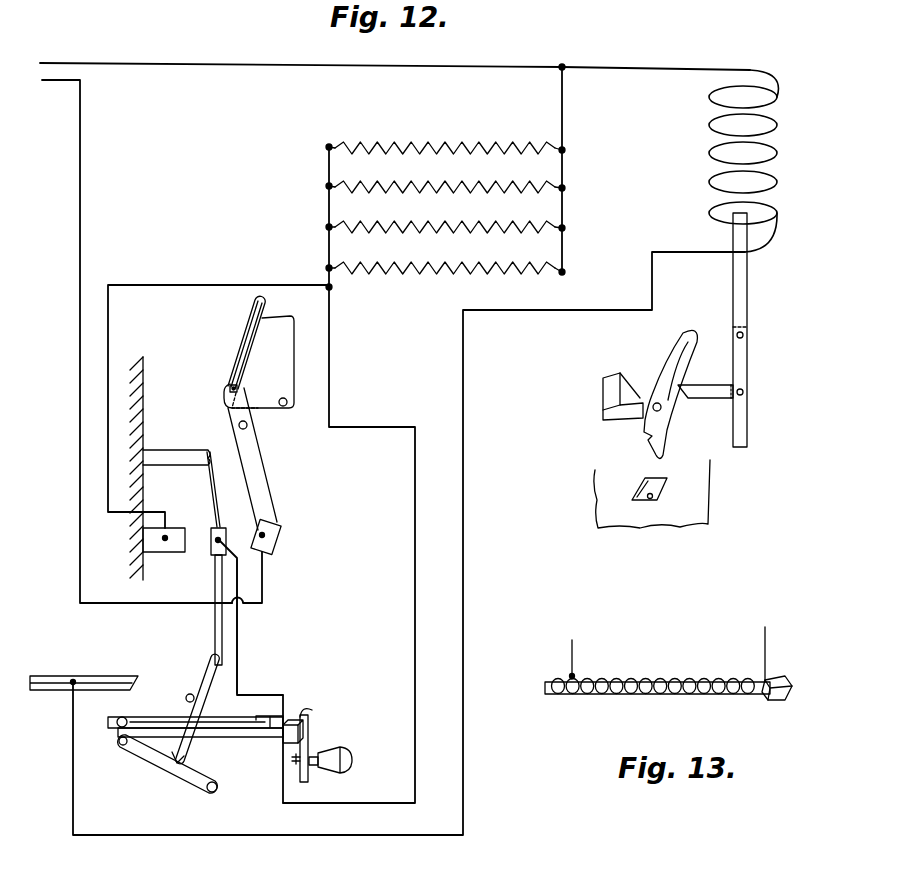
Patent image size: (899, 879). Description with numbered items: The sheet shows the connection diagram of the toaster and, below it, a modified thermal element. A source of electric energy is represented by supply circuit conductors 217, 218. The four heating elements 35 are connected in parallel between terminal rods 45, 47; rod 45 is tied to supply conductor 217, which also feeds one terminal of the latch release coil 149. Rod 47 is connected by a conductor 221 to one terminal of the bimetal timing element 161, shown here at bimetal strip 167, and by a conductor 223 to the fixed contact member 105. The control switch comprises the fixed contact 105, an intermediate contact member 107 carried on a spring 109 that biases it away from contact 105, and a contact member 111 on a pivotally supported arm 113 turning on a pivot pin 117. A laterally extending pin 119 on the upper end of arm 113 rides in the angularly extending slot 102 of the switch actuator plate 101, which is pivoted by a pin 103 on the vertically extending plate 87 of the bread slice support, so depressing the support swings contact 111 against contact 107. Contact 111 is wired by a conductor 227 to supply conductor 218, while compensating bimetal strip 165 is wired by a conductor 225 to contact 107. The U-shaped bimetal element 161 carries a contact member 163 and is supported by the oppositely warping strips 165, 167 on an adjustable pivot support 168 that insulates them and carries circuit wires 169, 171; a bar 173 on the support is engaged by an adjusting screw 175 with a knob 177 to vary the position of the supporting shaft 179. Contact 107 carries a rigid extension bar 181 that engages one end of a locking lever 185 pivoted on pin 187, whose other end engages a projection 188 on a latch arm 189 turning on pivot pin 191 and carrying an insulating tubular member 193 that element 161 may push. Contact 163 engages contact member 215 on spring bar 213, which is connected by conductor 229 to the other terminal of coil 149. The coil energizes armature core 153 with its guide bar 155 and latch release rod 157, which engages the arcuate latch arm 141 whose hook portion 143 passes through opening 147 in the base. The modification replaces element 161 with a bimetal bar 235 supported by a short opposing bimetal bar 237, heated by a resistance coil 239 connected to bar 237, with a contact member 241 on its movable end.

In FIG. 12, the heating elements 35 is at (462, 134).
In FIG. 12, the terminal rod 45 is at (563, 171).
In FIG. 12, the terminal rod 47 is at (329, 178).
In FIG. 12, the vertically-extending plate 87 is at (603, 399).
In FIG. 12, the switch actuator plate 101 is at (270, 373).
In FIG. 12, the angularly extending slot 102 is at (251, 343).
In FIG. 12, the pivot pin 103 is at (287, 402).
In FIG. 12, the fixed contact member 105 is at (185, 556).
In FIG. 12, the intermediate contact member 107 is at (223, 528).
In FIG. 12, the spring 109 is at (209, 497).
In FIG. 12, the contact member 111 is at (271, 529).
In FIG. 12, the pivotally supported arm 113 is at (268, 475).
In FIG. 12, the pivot pin 117 is at (247, 425).
In FIG. 12, the laterally extending pin 119 is at (229, 388).
In FIG. 12, the latch arm 141 is at (668, 358).
In FIG. 12, the hook portion 143 is at (645, 442).
In FIG. 12, the opening 147 is at (650, 499).
In FIG. 12, the latch release coil 149 is at (779, 163).
In FIG. 12, the armature core 153 is at (748, 292).
In FIG. 12, the guide bar 155 is at (748, 427).
In FIG. 12, the latch release rod 157 is at (704, 385).
In FIG. 12, the bimetal element 161 is at (165, 717).
In FIG. 12, the contact member 163 is at (117, 722).
In FIG. 12, the bimetal strip 165 is at (269, 719).
In FIG. 12, the bimetal strip 167 is at (264, 741).
In FIG. 12, the adjustable pivot support 168 is at (291, 720).
In FIG. 12, the circuit wire 169 is at (284, 694).
In FIG. 12, the circuit wire 171 is at (285, 805).
In FIG. 12, the bar 173 is at (309, 741).
In FIG. 12, the adjusting screw 175 is at (294, 765).
In FIG. 12, the adjusting knob 177 is at (341, 753).
In FIG. 12, the supporting shaft 179 is at (313, 712).
In FIG. 12, the extension bar 181 is at (214, 618).
In FIG. 12, the locking lever 185 is at (207, 661).
In FIG. 12, the pivot pin 187 is at (195, 699).
In FIG. 12, the projection 188 is at (182, 759).
In FIG. 12, the latch arm 189 is at (144, 771).
In FIG. 12, the pivot pin 191 is at (208, 794).
In FIG. 12, the tubular member 193 is at (119, 742).
In FIG. 12, the spring bar 213 is at (100, 676).
In FIG. 12, the contact member 215 is at (122, 692).
In FIG. 12, the supply circuit conductor 217 is at (71, 63).
In FIG. 12, the supply circuit conductor 218 is at (42, 80).
In FIG. 12, the conductor 221 is at (415, 572).
In FIG. 12, the conductor 223 is at (192, 286).
In FIG. 12, the conductor 225 is at (240, 647).
In FIG. 12, the conductor 227 is at (79, 412).
In FIG. 12, the conductor 229 is at (464, 611).
In FIG. 13, the bimetal bar 235 is at (658, 699).
In FIG. 13, the short bimetal bar 237 is at (768, 701).
In FIG. 13, the coil of wire 239 is at (647, 684).
In FIG. 13, the contact member 241 is at (560, 678).